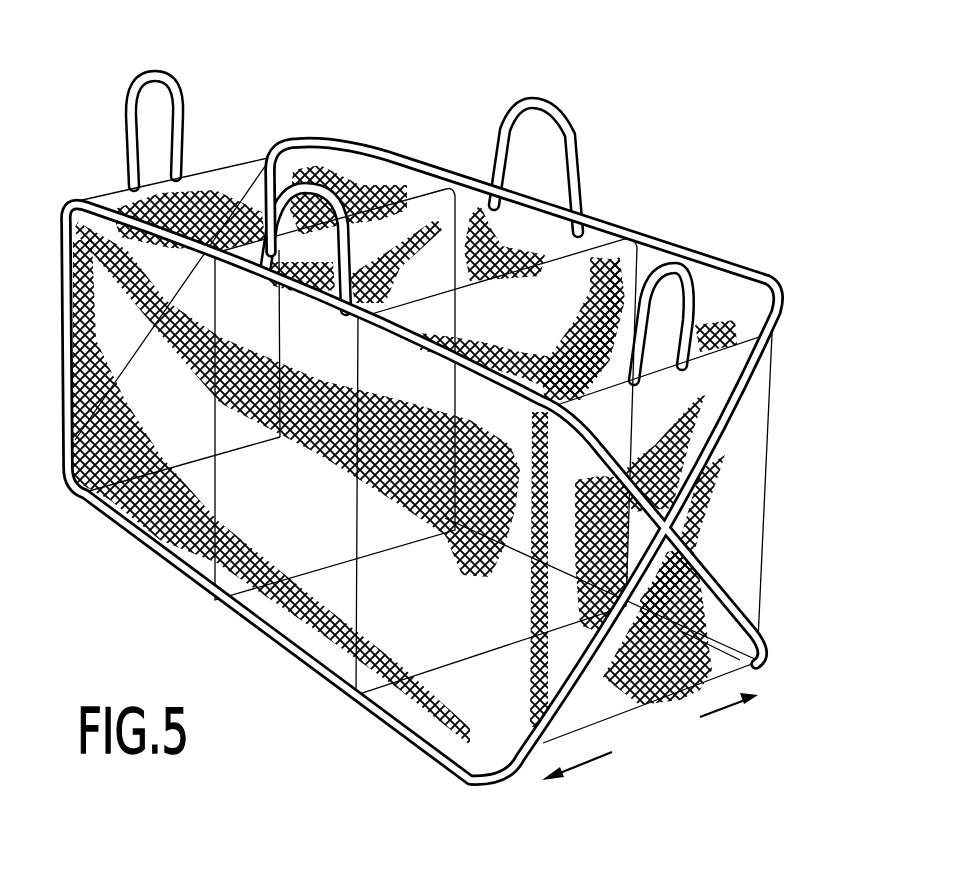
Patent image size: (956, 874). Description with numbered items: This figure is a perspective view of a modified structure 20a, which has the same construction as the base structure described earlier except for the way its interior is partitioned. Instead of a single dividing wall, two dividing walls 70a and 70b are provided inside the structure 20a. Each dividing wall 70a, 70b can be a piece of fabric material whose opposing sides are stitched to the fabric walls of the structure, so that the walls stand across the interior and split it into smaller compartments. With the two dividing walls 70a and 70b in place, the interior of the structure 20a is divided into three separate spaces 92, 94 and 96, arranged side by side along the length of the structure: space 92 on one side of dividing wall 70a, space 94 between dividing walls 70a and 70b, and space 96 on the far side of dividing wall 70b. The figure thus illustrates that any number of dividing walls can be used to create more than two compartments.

The structure 20a is at (778, 84).
The space 92 is at (345, 176).
The space 94 is at (516, 217).
The space 96 is at (716, 296).
The dividing wall 70a is at (415, 197).
The dividing wall 70b is at (590, 242).